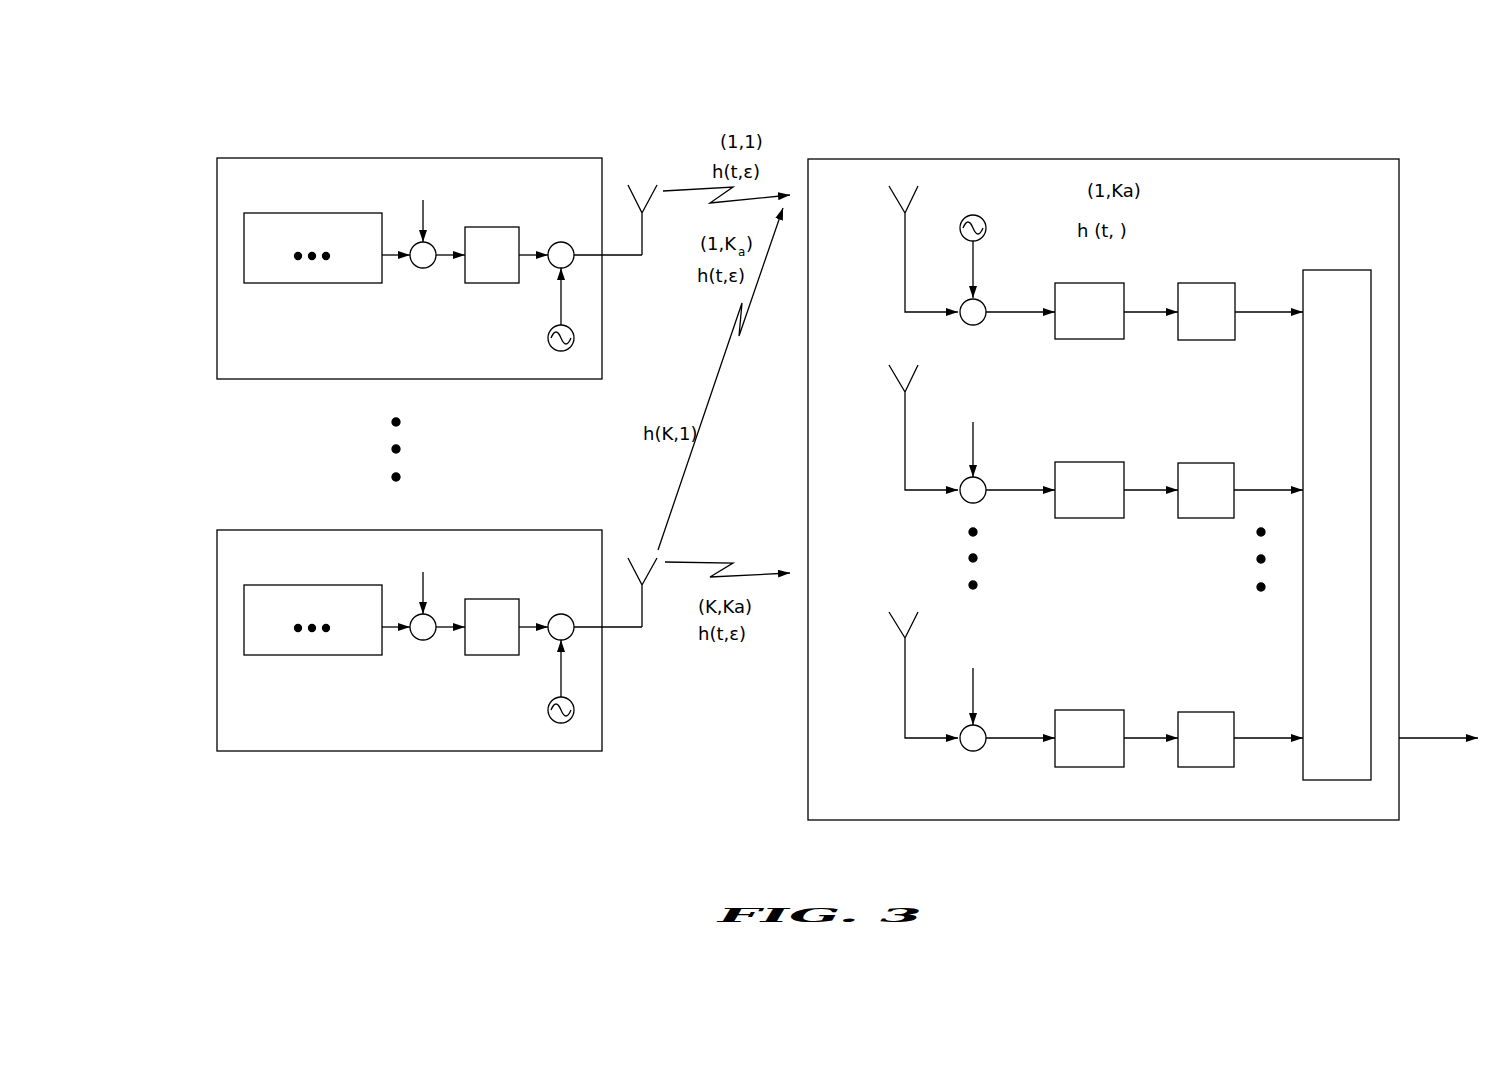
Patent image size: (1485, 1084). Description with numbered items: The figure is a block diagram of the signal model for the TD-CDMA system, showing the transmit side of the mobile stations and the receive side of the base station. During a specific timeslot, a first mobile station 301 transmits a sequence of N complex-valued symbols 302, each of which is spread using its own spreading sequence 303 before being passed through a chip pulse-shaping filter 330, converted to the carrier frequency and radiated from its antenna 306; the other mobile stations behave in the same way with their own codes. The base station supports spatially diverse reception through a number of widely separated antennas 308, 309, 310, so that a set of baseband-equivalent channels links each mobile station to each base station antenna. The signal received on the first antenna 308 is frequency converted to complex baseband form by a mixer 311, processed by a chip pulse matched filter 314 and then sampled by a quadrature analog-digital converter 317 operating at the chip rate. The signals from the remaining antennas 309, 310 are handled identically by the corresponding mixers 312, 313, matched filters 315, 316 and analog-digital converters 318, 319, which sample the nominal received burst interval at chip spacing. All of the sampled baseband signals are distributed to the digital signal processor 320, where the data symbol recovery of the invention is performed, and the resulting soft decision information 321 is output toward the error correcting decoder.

The mobile station 301 is at (270, 158).
The symbols 302 is at (262, 213).
The spreading sequence 303 is at (435, 188).
The chip pulse-shaping filter 330 is at (478, 283).
The base station antenna 308 is at (548, 335).
The antenna 306 is at (653, 190).
The base station antenna 309 is at (916, 375).
The base station antenna 310 is at (910, 615).
The mixer 311 is at (931, 255).
The mixer 312 is at (936, 434).
The mixer 313 is at (928, 681).
The chip pulse matched filter 314 is at (1055, 297).
The chip pulse matched filter 315 is at (1055, 479).
The chip pulse matched filter 316 is at (1055, 725).
The quadrature analog-digital converter 317 is at (1213, 298).
The analog-digital converter 318 is at (1213, 478).
The analog-digital converter 319 is at (1213, 724).
The digital signal processor 320 is at (1313, 270).
The soft decision information output 321 is at (1443, 830).